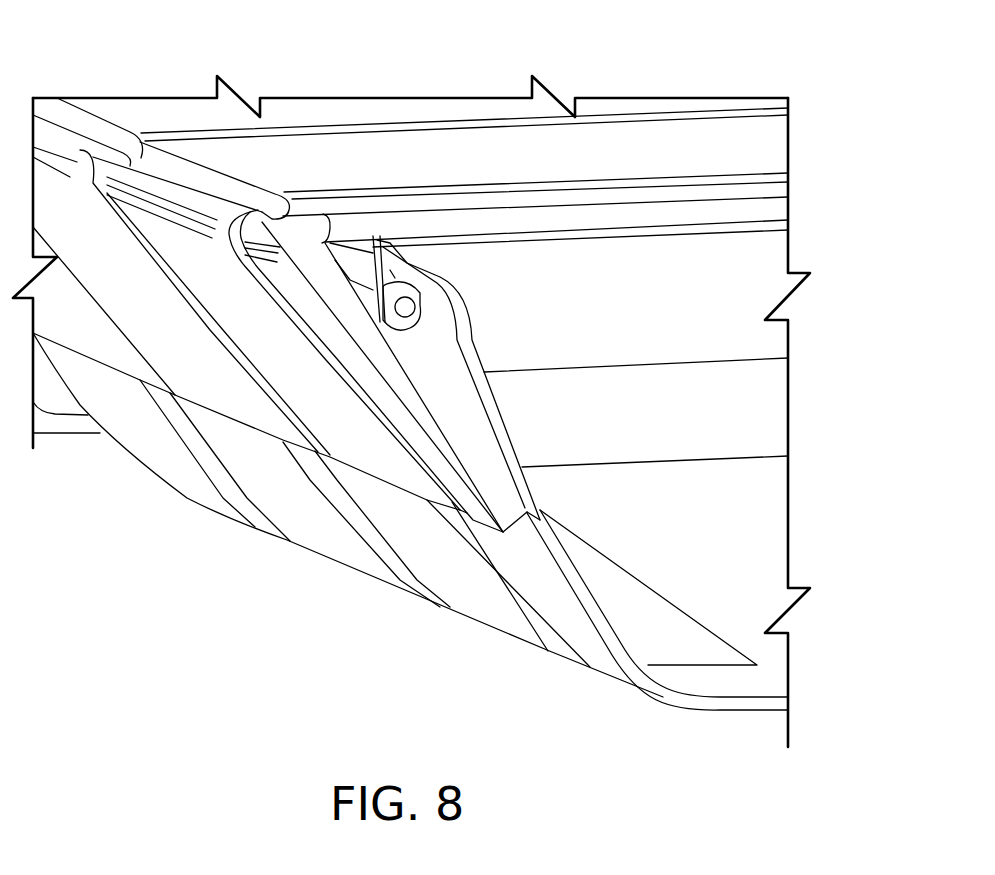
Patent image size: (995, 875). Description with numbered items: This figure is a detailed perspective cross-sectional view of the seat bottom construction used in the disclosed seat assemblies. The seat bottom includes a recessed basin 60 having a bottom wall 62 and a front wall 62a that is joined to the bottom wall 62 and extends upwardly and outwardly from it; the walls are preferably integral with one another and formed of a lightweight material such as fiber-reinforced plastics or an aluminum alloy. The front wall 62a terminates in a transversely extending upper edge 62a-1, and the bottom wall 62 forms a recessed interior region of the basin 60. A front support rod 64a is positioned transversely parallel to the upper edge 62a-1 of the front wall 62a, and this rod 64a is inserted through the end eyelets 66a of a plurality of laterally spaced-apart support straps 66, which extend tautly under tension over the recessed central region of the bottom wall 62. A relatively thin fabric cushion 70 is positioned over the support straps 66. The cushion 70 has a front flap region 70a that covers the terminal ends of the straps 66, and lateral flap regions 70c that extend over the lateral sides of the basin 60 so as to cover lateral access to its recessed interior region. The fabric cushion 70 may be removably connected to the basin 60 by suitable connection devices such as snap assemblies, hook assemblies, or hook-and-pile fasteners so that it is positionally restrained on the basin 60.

The fabric cushion 70 is at (641, 97).
The lateral flap region 70c is at (347, 167).
The front flap region 70a is at (160, 313).
The upper edge 62a-1 is at (403, 253).
The end eyelet 66a is at (413, 297).
The front support rod 64a is at (403, 308).
The support strap 66 is at (706, 234).
The recessed basin 60 is at (139, 426).
The front wall 62a is at (445, 561).
The bottom wall 62 is at (722, 561).